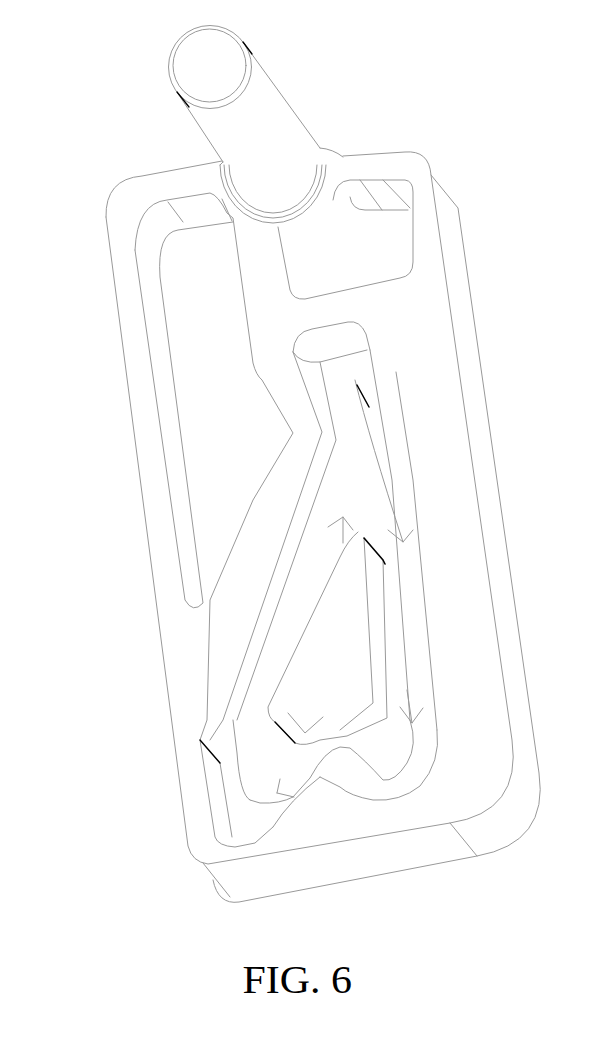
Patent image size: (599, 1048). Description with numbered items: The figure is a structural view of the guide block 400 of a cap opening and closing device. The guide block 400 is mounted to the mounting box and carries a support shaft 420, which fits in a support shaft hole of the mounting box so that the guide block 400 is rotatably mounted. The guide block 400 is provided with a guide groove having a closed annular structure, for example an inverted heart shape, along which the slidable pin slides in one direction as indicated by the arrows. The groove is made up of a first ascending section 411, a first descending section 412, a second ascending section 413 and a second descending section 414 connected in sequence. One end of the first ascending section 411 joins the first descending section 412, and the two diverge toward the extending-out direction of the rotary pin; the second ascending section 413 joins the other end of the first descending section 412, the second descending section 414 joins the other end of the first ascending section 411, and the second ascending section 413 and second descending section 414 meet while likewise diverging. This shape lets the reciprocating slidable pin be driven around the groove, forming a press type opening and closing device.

The guide block 400 is at (405, 167).
The support shaft 420 is at (281, 108).
The first ascending section 411 is at (300, 568).
The first descending section 412 is at (413, 490).
The second ascending section 413 is at (380, 810).
The second descending section 414 is at (240, 815).